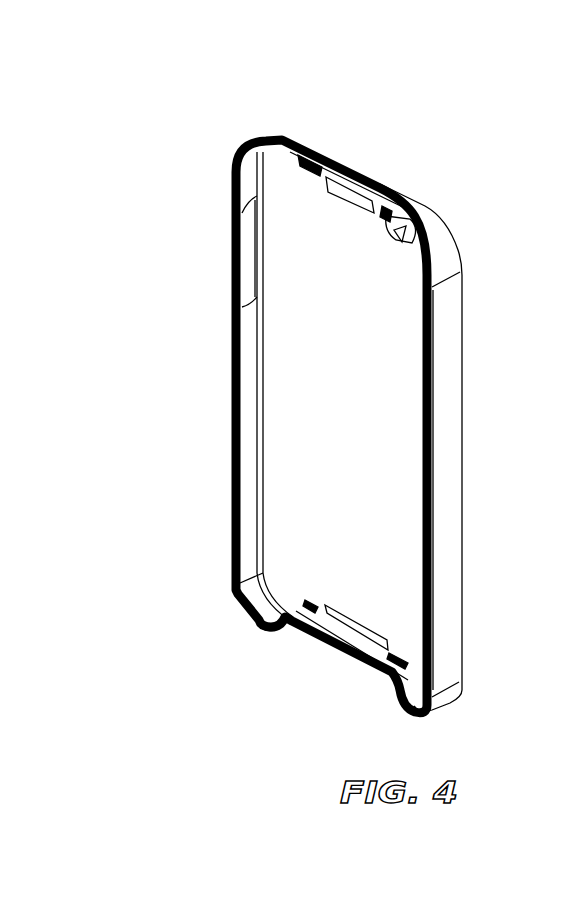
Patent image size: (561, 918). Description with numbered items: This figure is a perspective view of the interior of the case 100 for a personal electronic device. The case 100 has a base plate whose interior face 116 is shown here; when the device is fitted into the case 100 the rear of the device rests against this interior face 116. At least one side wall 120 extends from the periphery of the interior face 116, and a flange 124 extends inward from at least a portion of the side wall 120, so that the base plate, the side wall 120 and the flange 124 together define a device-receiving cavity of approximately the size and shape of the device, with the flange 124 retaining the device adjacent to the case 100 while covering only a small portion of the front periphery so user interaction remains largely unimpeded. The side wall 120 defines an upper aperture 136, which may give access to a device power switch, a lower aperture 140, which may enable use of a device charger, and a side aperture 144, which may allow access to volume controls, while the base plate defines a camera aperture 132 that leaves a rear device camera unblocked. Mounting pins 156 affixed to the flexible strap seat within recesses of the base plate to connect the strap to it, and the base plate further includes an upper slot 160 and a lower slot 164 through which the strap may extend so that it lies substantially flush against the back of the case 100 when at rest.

The case 100 is at (207, 132).
The interior face 116 is at (341, 418).
The side wall 120 is at (248, 494).
The flange 124 is at (233, 533).
The camera aperture 132 is at (405, 208).
The upper aperture 136 is at (305, 147).
The lower aperture 140 is at (283, 632).
The side aperture 144 is at (235, 213).
The mounting pins 156 is at (323, 156).
The upper slot 160 is at (373, 188).
The lower slot 164 is at (362, 660).